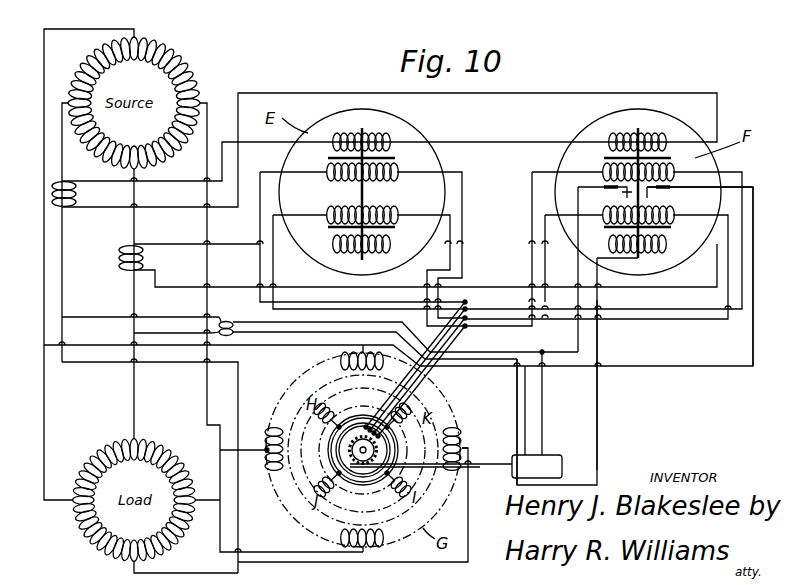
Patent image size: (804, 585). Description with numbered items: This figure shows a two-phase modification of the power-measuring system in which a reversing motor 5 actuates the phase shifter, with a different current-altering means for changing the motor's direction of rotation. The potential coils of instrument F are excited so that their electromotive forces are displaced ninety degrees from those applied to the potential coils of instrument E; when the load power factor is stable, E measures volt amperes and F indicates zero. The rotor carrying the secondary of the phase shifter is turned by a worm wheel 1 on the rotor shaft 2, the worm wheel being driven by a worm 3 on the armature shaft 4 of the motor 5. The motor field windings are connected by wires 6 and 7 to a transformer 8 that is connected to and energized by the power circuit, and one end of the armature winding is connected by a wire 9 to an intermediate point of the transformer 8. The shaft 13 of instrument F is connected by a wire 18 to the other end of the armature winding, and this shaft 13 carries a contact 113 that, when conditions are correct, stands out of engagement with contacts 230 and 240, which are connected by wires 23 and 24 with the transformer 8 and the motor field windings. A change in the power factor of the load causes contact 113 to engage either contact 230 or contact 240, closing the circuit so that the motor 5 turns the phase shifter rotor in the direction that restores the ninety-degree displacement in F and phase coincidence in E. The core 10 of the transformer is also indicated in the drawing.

The worm wheel 1 is at (333, 452).
The rotor shaft 2 is at (343, 457).
The worm 3 is at (361, 478).
The armature shaft 4 is at (476, 468).
The motor 5 is at (557, 455).
The wire 6 is at (543, 403).
The wire 7 is at (517, 401).
The transformer 8 is at (227, 320).
The wire 9 is at (543, 385).
The transformer core 10 is at (369, 193).
The shaft 13 is at (672, 203).
The wire 18 is at (598, 441).
The wire 23 is at (708, 276).
The wire 24 is at (572, 352).
The contact 113 is at (622, 191).
The contact 230 is at (672, 185).
The contact 240 is at (607, 181).